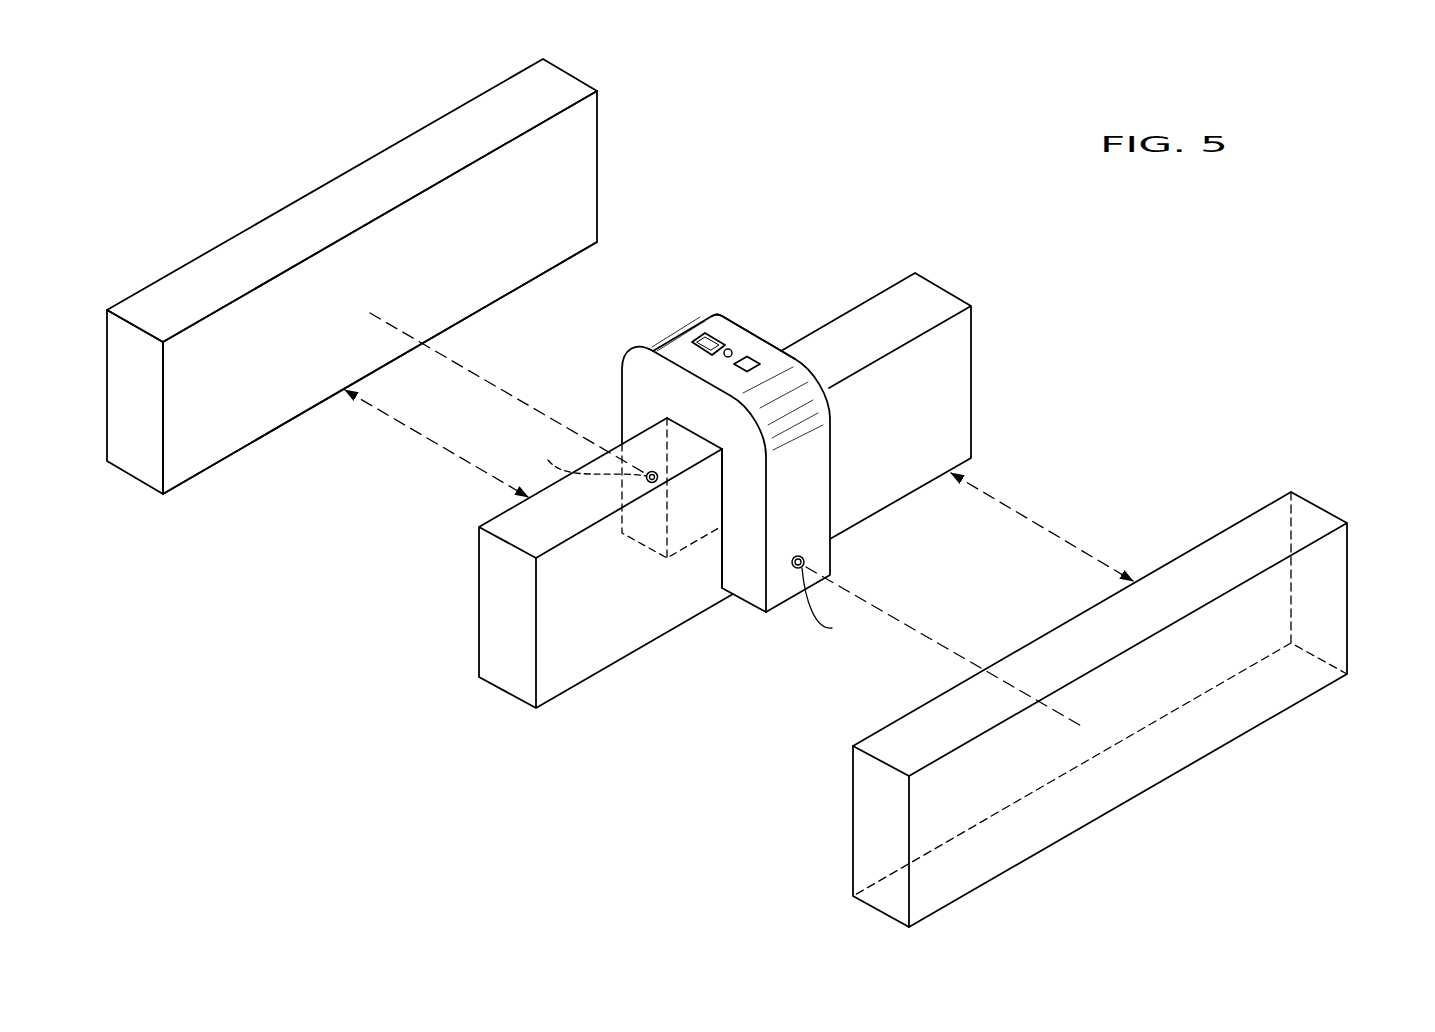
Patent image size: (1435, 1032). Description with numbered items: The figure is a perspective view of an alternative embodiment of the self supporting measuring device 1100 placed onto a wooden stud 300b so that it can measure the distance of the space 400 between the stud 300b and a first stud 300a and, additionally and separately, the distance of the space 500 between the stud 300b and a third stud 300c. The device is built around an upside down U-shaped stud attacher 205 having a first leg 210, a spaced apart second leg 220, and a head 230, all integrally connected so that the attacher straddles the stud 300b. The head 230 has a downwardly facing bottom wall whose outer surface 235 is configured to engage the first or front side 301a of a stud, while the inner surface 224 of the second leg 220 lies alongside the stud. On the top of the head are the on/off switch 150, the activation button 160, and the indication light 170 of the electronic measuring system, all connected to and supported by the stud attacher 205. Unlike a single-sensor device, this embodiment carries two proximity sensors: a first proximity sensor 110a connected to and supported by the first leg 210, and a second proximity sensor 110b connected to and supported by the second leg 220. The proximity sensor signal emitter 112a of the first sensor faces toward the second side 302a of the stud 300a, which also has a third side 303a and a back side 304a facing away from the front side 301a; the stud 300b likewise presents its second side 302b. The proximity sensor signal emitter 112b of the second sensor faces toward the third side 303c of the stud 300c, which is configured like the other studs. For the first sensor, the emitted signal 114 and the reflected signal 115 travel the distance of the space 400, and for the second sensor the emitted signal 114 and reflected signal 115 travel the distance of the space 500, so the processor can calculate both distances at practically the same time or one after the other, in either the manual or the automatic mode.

The measuring device 1100 is at (704, 465).
The stud attacher 205 is at (708, 311).
The head 230 is at (655, 331).
The outer surface of the fifth wall 235 is at (688, 434).
The first leg 210 is at (633, 542).
The second leg 220 is at (767, 617).
The inner surface of second leg 224 is at (722, 563).
The on/off switch 150 is at (718, 336).
The indication light 170 is at (733, 350).
The activation button 160 is at (753, 355).
The first proximity sensor 110a is at (648, 474).
The second proximity sensor 110b is at (806, 560).
The proximity sensor signal emitter 112a is at (570, 454).
The proximity sensor signal emitter 112b is at (843, 605).
The emitted signal 114 is at (475, 375).
The reflected signal 115 is at (926, 636).
The space 400 is at (433, 441).
The space 500 is at (1038, 524).
The stud 300a is at (362, 274).
The first or front side 301a is at (534, 82).
The second side 302a is at (228, 427).
The third side 303a is at (123, 302).
The fourth or back side 304a is at (212, 467).
The stud 300b is at (765, 476).
The second side 302b is at (602, 642).
The stud 300c is at (1110, 694).
The third side 303c is at (866, 740).